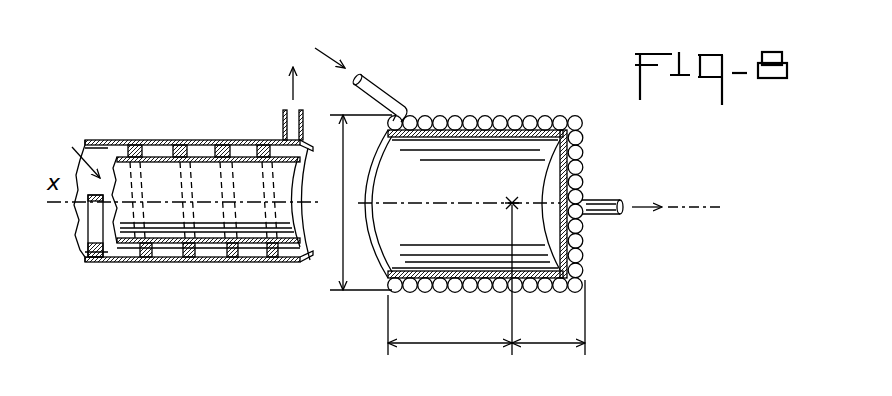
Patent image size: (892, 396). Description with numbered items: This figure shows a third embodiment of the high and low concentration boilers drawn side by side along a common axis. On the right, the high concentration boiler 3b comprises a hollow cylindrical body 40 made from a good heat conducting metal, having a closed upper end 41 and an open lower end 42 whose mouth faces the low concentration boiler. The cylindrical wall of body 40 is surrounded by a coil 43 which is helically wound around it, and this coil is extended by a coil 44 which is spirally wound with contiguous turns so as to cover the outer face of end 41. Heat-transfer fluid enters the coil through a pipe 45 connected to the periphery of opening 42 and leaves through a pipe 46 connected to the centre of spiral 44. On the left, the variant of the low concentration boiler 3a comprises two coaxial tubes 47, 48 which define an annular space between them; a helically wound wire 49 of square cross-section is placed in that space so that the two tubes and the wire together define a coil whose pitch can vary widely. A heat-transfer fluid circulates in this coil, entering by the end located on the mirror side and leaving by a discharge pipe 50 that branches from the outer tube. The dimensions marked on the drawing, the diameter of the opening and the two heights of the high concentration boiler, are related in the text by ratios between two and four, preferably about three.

The boiler 3a is at (148, 282).
The second tube member 3b is at (598, 322).
The hollow cylindrical body 40 is at (458, 140).
The closed upper end 41 is at (550, 223).
The open lower end 42 is at (382, 243).
The coil 43 is at (513, 120).
The coil 44 is at (587, 157).
The pipe 45 is at (387, 107).
The pipe 46 is at (607, 215).
The coaxial tube 47 is at (100, 138).
The coaxial tube 48 is at (157, 140).
The helically wound wire 49 is at (203, 140).
The discharge pipe 50 is at (280, 125).